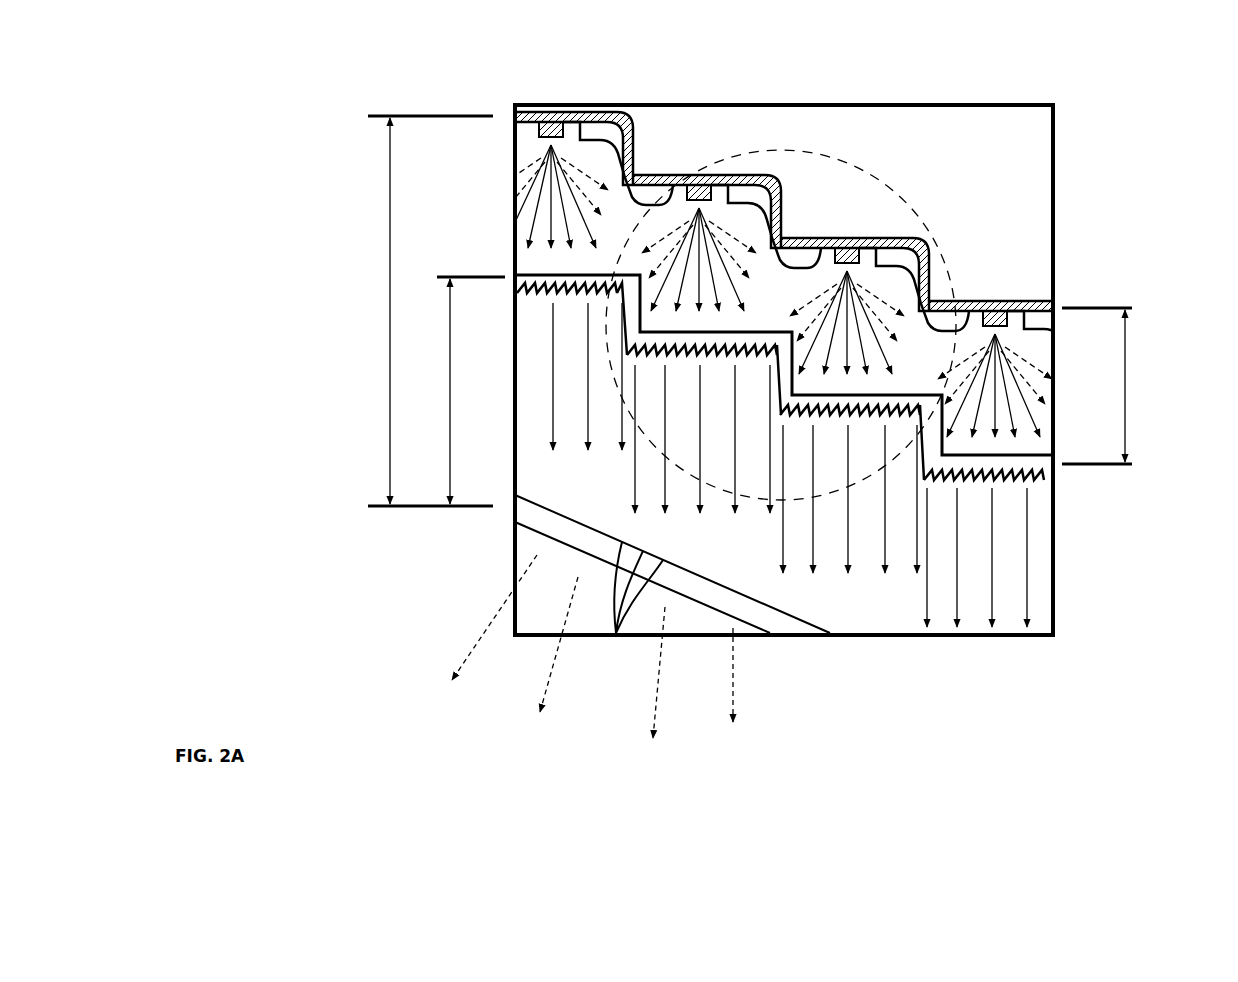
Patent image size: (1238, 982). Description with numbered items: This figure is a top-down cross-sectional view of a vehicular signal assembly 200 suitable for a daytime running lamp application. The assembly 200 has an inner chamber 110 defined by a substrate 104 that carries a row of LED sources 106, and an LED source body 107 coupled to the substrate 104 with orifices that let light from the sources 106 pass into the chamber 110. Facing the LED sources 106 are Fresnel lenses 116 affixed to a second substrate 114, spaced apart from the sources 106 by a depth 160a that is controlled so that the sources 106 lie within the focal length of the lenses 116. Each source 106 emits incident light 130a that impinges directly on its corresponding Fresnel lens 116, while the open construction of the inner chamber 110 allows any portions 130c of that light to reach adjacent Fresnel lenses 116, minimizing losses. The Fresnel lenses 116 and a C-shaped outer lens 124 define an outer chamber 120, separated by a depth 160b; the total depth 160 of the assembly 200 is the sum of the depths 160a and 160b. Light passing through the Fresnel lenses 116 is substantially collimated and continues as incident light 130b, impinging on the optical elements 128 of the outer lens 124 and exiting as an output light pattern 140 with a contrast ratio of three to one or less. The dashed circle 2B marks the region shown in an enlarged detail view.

The vehicular signal assembly 200 is at (322, 156).
The substrate 104 is at (515, 124).
The LED sources 106 is at (693, 180).
The LED source body 107 is at (740, 233).
The inner chamber 110 is at (917, 356).
The substrate 114 is at (523, 277).
The Fresnel lenses 116 is at (677, 350).
The outer chamber 120 is at (858, 602).
The outer lens 124 is at (527, 515).
The optical elements 128 is at (616, 633).
The incident light 130a is at (1005, 378).
The incident light 130b is at (992, 548).
The portions of incident light 130c is at (770, 222).
The output light pattern 140 is at (470, 648).
The total depth 160 is at (426, 311).
The depth 160a is at (1105, 365).
The depth 160b is at (463, 390).
The detail region of FIG. 2B is at (870, 170).